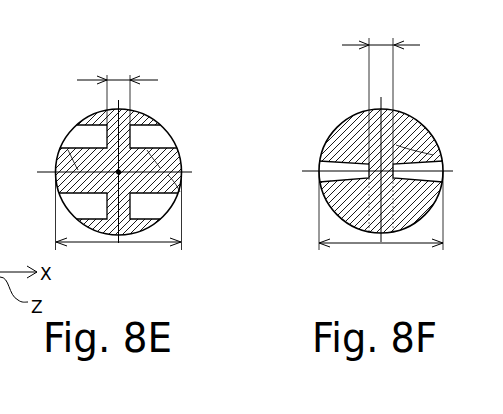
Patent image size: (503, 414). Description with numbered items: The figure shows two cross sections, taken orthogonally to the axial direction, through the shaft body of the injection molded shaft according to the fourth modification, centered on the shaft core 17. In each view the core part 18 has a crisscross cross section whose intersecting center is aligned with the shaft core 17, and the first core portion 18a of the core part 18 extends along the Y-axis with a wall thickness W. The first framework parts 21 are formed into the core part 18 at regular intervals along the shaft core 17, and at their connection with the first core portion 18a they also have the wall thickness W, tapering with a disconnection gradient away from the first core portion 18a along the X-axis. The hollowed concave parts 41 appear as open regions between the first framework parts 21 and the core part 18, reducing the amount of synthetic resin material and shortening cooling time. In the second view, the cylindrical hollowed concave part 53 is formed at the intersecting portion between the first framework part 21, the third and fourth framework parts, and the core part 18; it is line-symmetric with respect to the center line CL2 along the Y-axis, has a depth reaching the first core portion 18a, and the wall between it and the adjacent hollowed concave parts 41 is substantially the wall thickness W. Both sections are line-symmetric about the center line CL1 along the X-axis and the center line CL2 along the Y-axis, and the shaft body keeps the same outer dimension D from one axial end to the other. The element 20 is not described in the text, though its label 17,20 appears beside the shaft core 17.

In FIG. 8E, the shaft core 17 is at (160, 160).
In FIG. 8F, the shaft core 17 is at (433, 155).
In FIG. 8E, the core part 18 is at (131, 130).
In FIG. 8F, the core part 18 is at (381, 135).
In FIG. 8E, the first core portion 18a is at (184, 102).
In FIG. 8F, the first core portion 18a is at (320, 160).
In FIG. 8E, the head portion 20 is at (155, 147).
In FIG. 8E, the first framework part 21 is at (70, 127).
In FIG. 8F, the first framework part 21 is at (405, 107).
In FIG. 8E, the hollowed concave part 41 is at (92, 134).
In FIG. 8F, the cylindrical hollowed concave part 53 is at (326, 167).
In FIG. 8E, the center line along the X-axis CL1 is at (182, 192).
In FIG. 8F, the center line along the X-axis CL1 is at (347, 170).
In FIG. 8E, the center line along the Y-axis CL2 is at (60, 152).
In FIG. 8F, the center line along the Y-axis CL2 is at (379, 108).
In FIG. 8E, the wall thickness W is at (117, 69).
In FIG. 8F, the wall thickness W is at (381, 34).
In FIG. 8E, the outer dimension D is at (119, 222).
In FIG. 8F, the outer dimension D is at (381, 221).